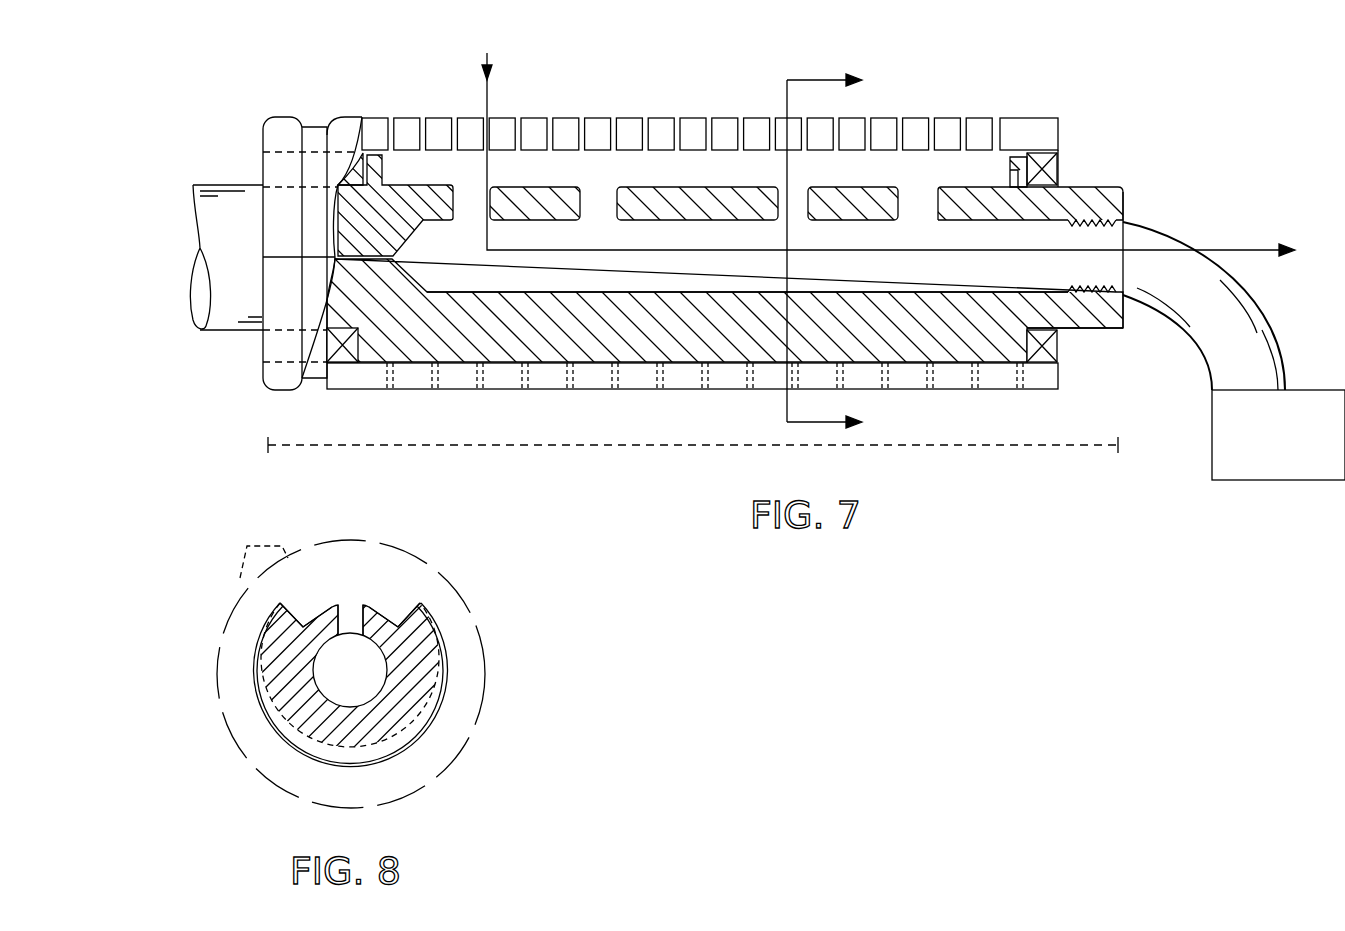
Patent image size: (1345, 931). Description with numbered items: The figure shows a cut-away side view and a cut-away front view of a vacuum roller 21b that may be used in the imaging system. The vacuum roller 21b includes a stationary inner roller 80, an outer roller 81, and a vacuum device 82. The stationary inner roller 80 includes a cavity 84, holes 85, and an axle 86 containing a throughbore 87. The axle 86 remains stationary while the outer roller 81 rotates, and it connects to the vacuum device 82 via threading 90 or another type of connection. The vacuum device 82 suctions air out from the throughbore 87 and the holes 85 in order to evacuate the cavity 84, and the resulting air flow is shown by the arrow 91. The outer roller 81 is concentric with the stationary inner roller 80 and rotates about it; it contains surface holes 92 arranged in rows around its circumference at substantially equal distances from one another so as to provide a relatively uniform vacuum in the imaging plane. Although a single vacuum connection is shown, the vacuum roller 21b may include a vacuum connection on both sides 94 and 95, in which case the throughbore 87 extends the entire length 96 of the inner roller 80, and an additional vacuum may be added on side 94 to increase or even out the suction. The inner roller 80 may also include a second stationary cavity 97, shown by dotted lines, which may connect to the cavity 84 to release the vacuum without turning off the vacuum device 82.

In FIG. 7, the vacuum roller 21b is at (186, 131).
In FIG. 8, the vacuum roller 21b is at (177, 600).
In FIG. 7, the stationary inner roller 80 is at (947, 327).
In FIG. 8, the stationary inner roller 80 is at (407, 717).
In FIG. 7, the outer roller 81 is at (628, 116).
In FIG. 8, the outer roller 81 is at (478, 624).
In FIG. 7, the vacuum device 82 is at (1260, 473).
In FIG. 7, the cavity 84 is at (408, 163).
In FIG. 8, the cavity 84 is at (400, 600).
In FIG. 7, the holes 85 is at (600, 190).
In FIG. 8, the holes 85 is at (352, 608).
In FIG. 7, the axle 86 is at (1118, 202).
In FIG. 7, the throughbore 87 is at (470, 256).
In FIG. 8, the throughbore 87 is at (367, 670).
In FIG. 7, the threading 90 is at (1094, 297).
In FIG. 7, the arrow 91 is at (1262, 291).
In FIG. 7, the surface holes 92 is at (457, 117).
In FIG. 8, the surface holes 92 is at (413, 543).
In FIG. 7, the side 94 is at (208, 336).
In FIG. 7, the side 95 is at (1132, 194).
In FIG. 7, the length 96 is at (1072, 448).
In FIG. 8, the second stationary cavity 97 is at (433, 703).